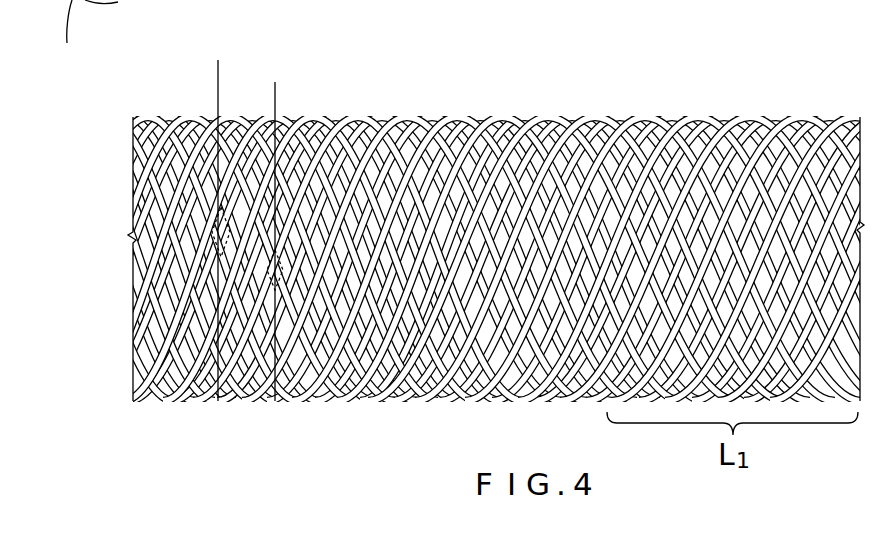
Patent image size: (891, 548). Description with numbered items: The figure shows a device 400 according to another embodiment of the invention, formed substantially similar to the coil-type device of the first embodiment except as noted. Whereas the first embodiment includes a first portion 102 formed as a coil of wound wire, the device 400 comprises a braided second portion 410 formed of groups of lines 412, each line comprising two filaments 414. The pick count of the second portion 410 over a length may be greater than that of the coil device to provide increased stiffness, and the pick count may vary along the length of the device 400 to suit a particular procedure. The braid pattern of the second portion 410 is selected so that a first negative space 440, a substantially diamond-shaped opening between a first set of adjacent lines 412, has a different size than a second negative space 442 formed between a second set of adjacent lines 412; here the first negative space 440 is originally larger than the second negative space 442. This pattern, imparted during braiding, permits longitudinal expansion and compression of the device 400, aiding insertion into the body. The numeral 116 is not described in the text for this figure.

The device 400 is at (119, 179).
The braided second portion 410 is at (689, 126).
The first portion 102 is at (532, 126).
The filament 414 is at (374, 160).
The first negative space 440 is at (218, 218).
The second negative space 442 is at (280, 229).
The line 412 is at (219, 401).
The distal end portion 116 is at (85, 36).